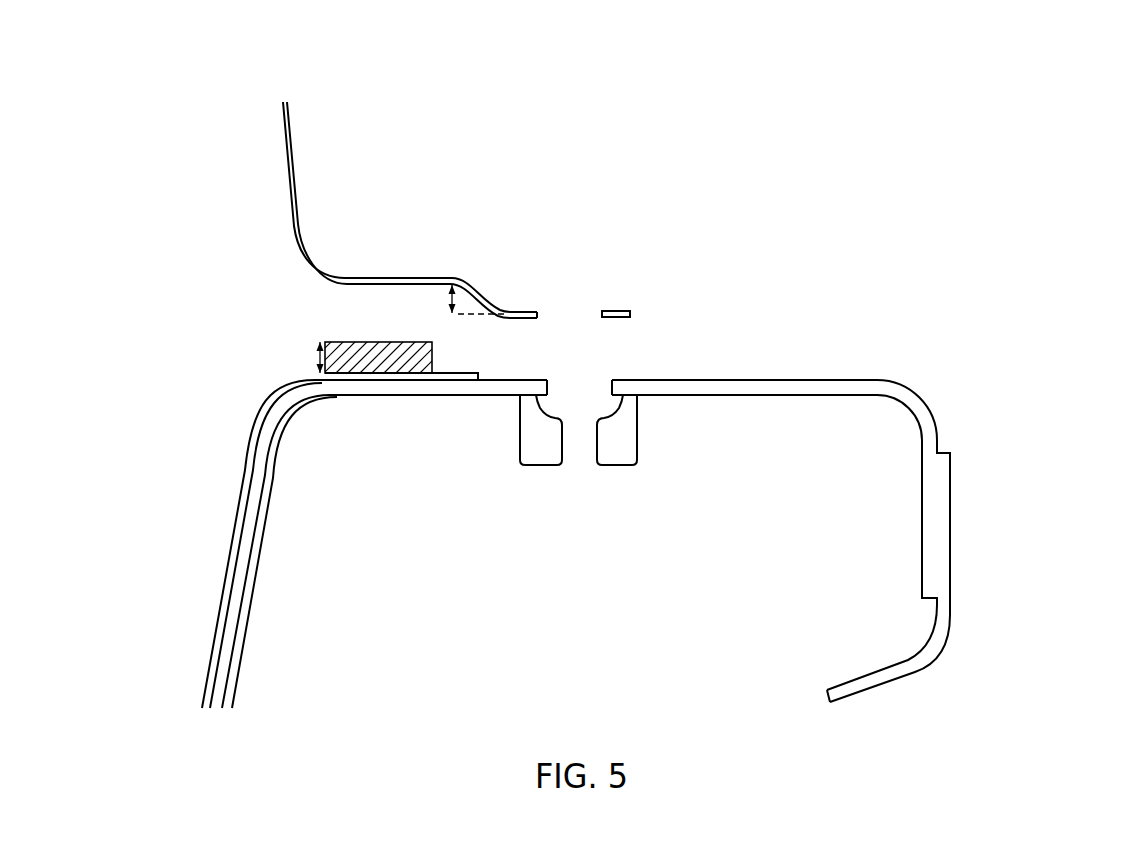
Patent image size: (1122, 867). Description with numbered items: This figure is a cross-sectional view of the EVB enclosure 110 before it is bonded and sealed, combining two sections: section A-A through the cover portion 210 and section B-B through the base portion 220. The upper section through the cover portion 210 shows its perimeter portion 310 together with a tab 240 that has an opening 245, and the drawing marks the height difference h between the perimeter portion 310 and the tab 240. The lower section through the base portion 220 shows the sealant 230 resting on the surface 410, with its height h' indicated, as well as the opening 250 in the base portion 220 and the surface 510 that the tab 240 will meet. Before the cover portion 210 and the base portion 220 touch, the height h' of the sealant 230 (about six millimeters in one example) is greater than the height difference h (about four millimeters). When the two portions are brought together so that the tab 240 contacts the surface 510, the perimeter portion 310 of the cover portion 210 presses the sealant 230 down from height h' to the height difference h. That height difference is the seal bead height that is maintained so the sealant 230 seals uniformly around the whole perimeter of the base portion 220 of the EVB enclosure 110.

The EVB enclosure 110 is at (1028, 145).
The cover portion 210 is at (555, 108).
The base portion 220 is at (952, 378).
The sealant 230 is at (347, 330).
The tab 240 is at (625, 300).
The opening 245 is at (568, 303).
The opening 250 is at (577, 428).
The perimeter portion 310 is at (385, 265).
The surface 410 is at (450, 373).
The surface 510 is at (539, 364).